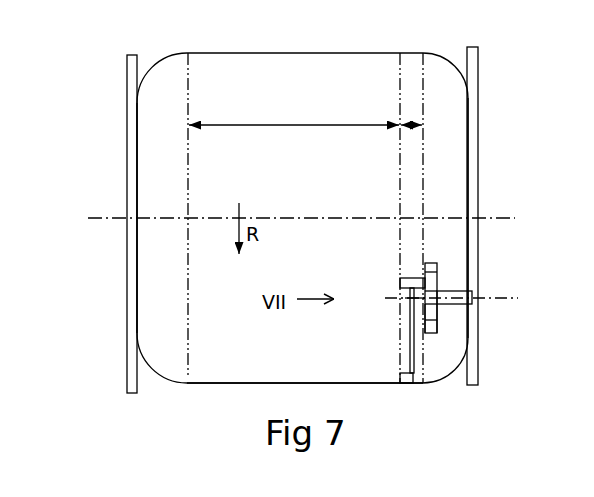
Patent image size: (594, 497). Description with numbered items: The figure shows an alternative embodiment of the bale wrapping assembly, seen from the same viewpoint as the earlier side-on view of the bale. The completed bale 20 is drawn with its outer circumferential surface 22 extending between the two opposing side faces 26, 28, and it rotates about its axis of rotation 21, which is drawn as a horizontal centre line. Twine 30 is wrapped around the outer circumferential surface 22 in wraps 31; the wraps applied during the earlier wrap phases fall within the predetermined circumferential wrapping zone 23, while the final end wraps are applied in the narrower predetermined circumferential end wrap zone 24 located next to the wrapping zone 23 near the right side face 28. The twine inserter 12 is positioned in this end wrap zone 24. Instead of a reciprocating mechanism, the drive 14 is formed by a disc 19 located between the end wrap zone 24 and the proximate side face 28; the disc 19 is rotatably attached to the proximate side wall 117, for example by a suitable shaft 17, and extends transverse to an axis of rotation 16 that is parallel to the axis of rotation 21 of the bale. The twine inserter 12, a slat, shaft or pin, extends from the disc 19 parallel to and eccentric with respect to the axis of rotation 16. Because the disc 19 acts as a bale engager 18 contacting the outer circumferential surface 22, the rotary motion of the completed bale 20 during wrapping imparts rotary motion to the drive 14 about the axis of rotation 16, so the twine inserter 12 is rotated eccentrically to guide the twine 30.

The side wall 117 is at (127, 90).
The completed bale 20 is at (460, 115).
The side face 26 is at (136, 145).
The side face 28 is at (466, 170).
The outer circumferential surface 22 is at (261, 370).
The axis of rotation 21 is at (510, 220).
The axis of rotation 16 is at (513, 301).
The wrapping zone 23 is at (317, 121).
The end wrap zone 24 is at (409, 112).
The twine inserter 12 is at (396, 280).
The drive 14 is at (439, 277).
The shaft 17 is at (445, 297).
The bale engager 18 is at (420, 300).
The disc 19 is at (438, 315).
The twine 30 is at (409, 343).
The wraps 31 is at (409, 375).